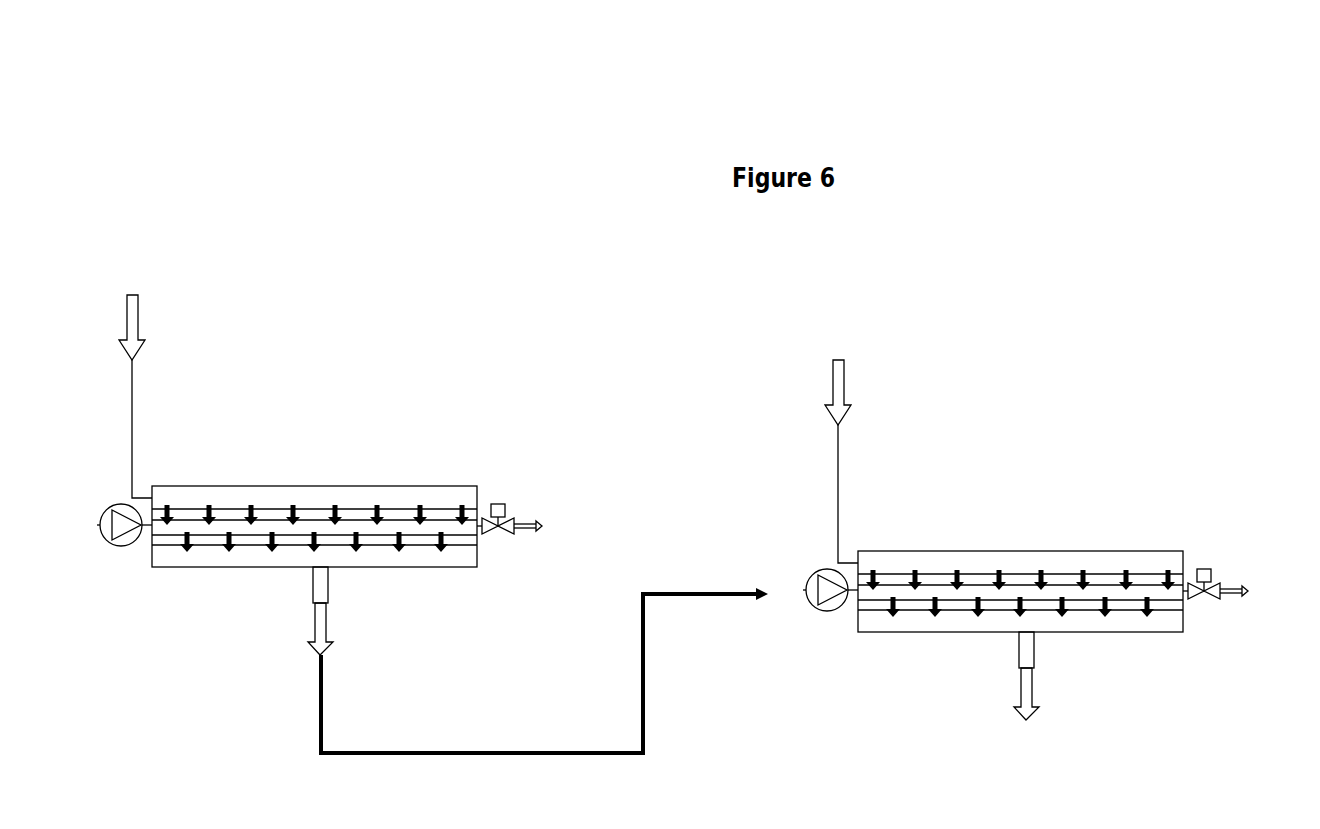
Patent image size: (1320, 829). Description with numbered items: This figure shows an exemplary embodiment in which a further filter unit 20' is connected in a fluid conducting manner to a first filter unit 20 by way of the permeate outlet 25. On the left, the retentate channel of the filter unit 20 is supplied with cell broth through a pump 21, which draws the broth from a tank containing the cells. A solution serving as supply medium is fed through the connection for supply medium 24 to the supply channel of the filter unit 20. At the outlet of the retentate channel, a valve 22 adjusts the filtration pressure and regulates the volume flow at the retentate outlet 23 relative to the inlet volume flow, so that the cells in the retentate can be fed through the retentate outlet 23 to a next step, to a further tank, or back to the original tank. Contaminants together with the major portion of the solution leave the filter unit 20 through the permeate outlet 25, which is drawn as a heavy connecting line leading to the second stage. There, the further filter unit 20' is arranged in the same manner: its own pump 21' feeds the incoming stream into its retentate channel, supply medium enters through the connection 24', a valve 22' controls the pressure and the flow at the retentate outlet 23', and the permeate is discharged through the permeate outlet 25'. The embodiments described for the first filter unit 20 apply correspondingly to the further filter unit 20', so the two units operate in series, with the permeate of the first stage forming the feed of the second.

The filter unit 20 is at (314, 597).
The pump 21 is at (137, 602).
The valve 22 is at (514, 595).
The outlet for retentate 23 is at (565, 590).
The connection for supply medium 24 is at (135, 381).
The outlet for permeate 25 is at (320, 630).
The further filter unit 20' is at (1020, 647).
The pump 21' is at (838, 661).
The valve 22' is at (1213, 651).
The outlet for retentate 23' is at (1263, 653).
The connection for supply medium 24' is at (840, 448).
The outlet for permeate 25' is at (1019, 693).